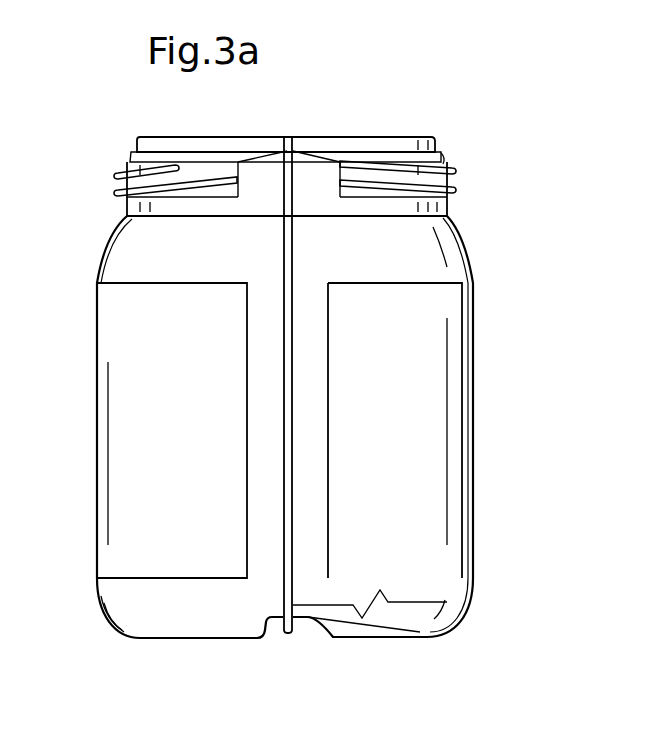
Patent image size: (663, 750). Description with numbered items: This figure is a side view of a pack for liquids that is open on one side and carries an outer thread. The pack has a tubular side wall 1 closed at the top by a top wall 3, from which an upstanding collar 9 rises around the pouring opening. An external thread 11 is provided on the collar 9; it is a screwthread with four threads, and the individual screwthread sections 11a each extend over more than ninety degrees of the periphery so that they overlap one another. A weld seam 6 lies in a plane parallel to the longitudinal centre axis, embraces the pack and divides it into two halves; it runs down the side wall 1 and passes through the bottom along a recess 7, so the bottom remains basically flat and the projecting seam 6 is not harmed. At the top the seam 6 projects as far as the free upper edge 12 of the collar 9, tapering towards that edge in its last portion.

The side wall 1 is at (452, 413).
The top wall 3 is at (453, 212).
The seam 6 is at (283, 260).
The recess 7 is at (320, 628).
The collar 9 is at (452, 162).
The external thread 11 is at (120, 175).
The screwthread section 11a is at (353, 158).
The free upper edge 12 is at (437, 143).